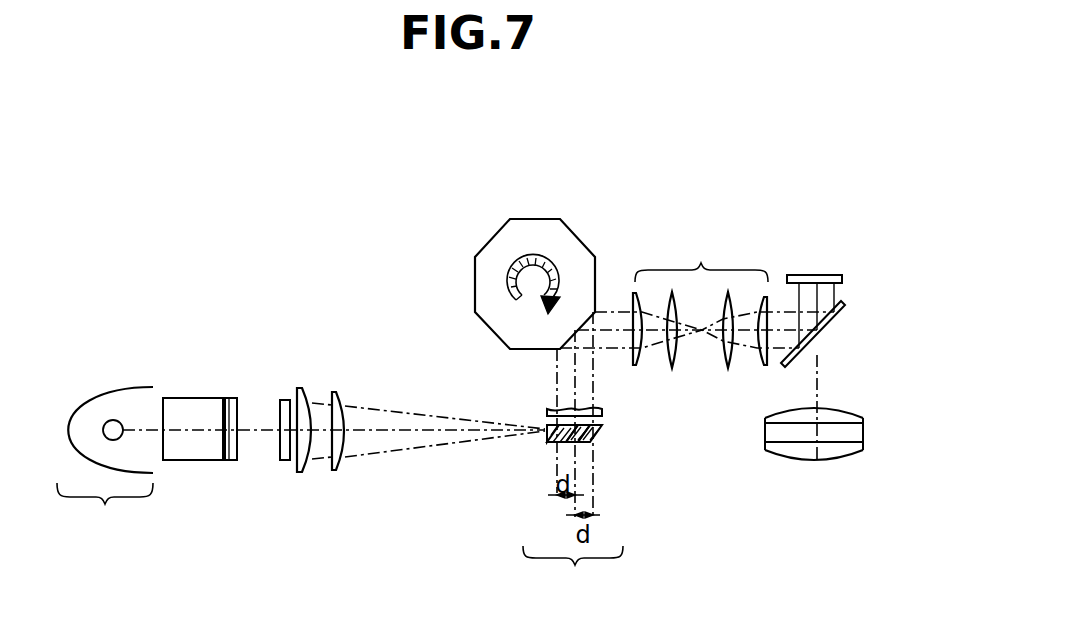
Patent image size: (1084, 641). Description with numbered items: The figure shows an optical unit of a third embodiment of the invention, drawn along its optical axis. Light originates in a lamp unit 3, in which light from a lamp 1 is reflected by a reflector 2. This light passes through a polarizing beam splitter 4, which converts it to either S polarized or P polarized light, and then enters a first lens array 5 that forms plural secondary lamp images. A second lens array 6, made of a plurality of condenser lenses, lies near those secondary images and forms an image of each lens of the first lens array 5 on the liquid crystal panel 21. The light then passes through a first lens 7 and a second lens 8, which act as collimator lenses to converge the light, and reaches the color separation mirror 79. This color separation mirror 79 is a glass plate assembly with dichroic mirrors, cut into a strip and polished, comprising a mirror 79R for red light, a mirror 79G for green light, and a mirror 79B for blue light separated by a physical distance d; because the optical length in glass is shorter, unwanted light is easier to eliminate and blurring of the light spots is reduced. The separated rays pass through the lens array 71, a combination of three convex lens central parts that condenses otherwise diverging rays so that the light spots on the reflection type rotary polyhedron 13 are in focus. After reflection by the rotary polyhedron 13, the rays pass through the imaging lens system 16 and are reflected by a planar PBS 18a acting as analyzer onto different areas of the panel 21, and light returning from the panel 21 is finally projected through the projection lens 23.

The lamp 1 is at (108, 418).
The reflector 2 is at (82, 400).
The lamp unit 3 is at (105, 504).
The polarizing beam splitter 4 is at (179, 398).
The first lens array 5 is at (232, 398).
The second lens array 6 is at (284, 400).
The first lens 7 is at (305, 390).
The second lens 8 is at (341, 392).
The reflection type rotary polyhedron 13 is at (492, 250).
The imaging lens system 16 is at (700, 298).
The planar PBS 18a is at (845, 303).
The liquid crystal panel 21 is at (834, 275).
The projection lens 23 is at (781, 462).
The lens array 71 is at (602, 412).
The color separation mirror 79 is at (577, 511).
The mirror for R light 79R is at (545, 436).
The mirror for G light 79G is at (578, 445).
The mirror for B light 79B is at (602, 430).